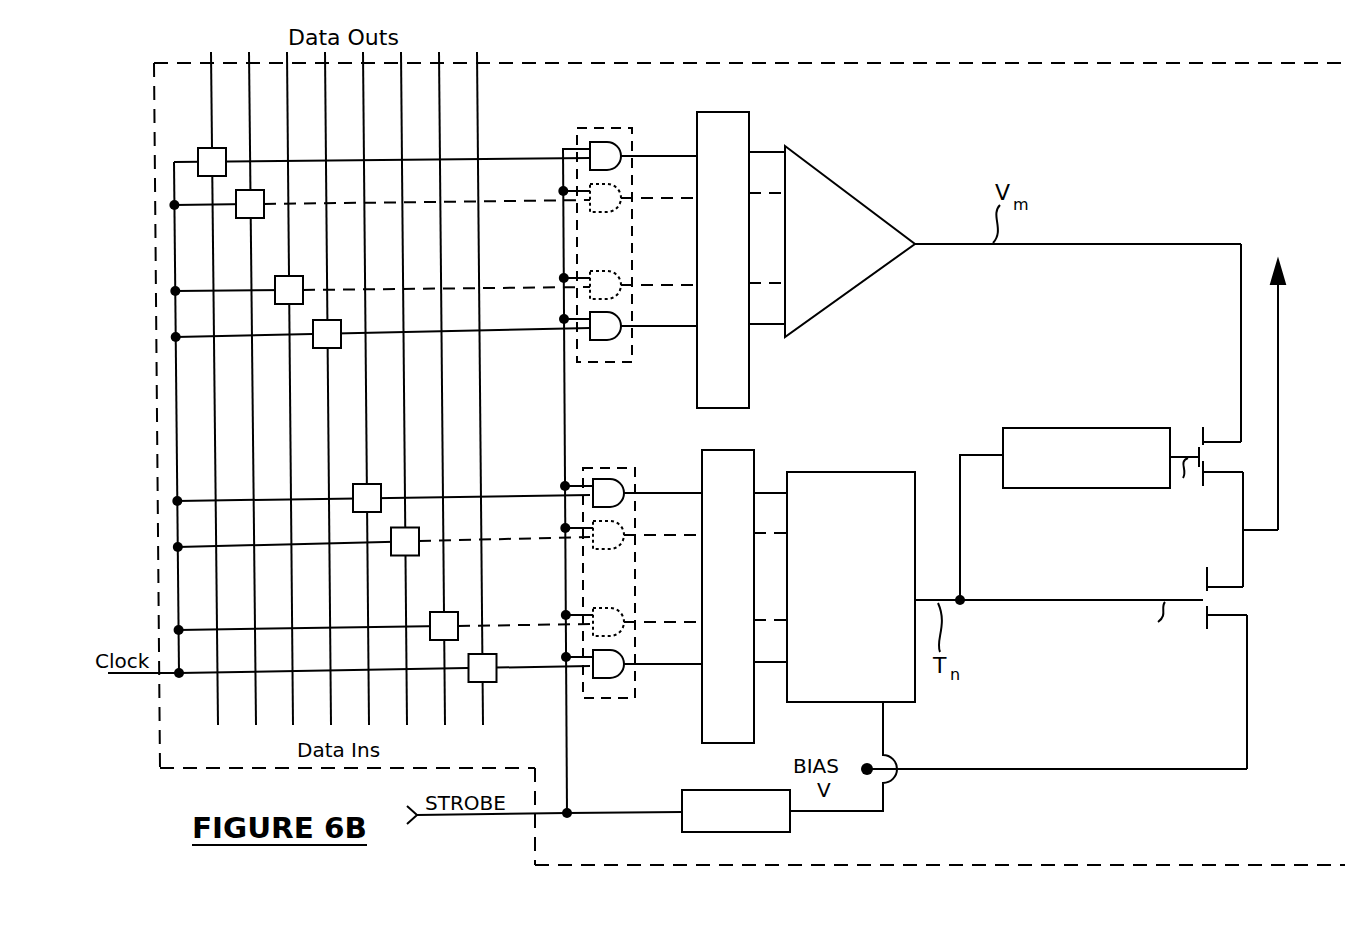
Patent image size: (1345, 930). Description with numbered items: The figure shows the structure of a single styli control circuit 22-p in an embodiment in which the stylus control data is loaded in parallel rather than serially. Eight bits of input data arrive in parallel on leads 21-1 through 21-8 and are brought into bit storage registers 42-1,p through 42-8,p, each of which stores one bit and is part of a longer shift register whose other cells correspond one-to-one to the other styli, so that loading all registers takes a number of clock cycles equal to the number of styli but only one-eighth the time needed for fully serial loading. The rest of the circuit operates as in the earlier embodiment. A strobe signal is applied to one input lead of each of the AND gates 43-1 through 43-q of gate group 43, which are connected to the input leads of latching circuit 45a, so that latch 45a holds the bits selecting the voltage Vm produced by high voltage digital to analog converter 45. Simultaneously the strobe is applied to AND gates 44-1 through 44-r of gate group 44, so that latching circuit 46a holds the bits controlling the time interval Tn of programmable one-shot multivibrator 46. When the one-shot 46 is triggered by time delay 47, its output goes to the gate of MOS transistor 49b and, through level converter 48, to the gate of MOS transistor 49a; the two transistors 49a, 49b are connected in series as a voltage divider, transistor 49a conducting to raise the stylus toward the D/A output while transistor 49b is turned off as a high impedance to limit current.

The lead 21-1 is at (208, 52).
The lead 21-8 is at (480, 52).
The styli control circuit 22-p is at (535, 850).
The bit storage register 42-1,p is at (210, 148).
The bit storage register 42-8,p is at (497, 648).
The AND gate 43-1 is at (592, 133).
The AND gates 43 is at (612, 128).
The AND gate 43-q is at (606, 363).
The AND gate 44-1 is at (592, 470).
The AND gate 44-r is at (619, 680).
The AND gates 44 is at (588, 703).
The latching circuit 45a is at (718, 112).
The high voltage digital to analog converter 45 is at (862, 197).
The programmable one-shot multivibrator 46 is at (880, 472).
The latching circuit 46a is at (738, 745).
The time delay 47 is at (712, 833).
The level converter 48 is at (1088, 428).
The MOS transistor 49a is at (1203, 428).
The MOS transistor 49b is at (1205, 580).